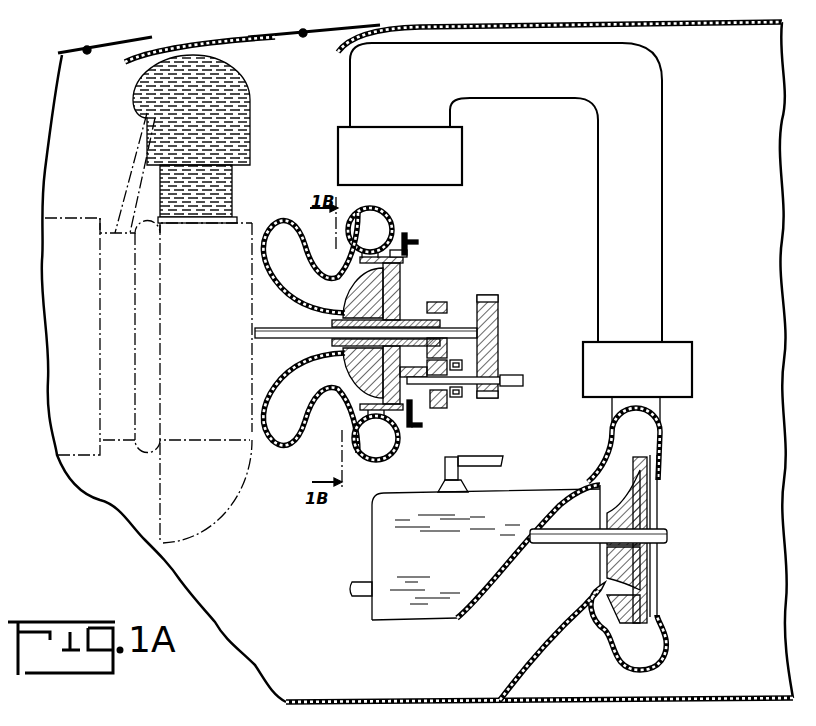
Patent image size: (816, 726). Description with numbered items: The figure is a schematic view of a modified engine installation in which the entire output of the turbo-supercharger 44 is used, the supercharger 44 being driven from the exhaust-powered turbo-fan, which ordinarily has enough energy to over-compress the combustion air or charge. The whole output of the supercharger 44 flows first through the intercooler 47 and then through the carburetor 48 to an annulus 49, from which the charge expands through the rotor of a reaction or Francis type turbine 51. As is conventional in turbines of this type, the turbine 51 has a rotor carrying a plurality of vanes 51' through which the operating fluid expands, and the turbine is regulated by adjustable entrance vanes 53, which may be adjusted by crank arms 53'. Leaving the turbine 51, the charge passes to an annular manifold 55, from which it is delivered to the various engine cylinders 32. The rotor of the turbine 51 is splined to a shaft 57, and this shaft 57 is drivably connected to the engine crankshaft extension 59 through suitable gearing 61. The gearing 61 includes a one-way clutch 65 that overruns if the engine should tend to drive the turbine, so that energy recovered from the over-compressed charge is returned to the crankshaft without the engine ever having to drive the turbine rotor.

The engine cylinders 32 is at (233, 188).
The turbo-supercharger 44 is at (638, 508).
The intercooler 47 is at (682, 363).
The carburetor 48 is at (462, 157).
The annulus 49 is at (400, 225).
The reaction turbine 51 is at (412, 333).
The vanes 51' is at (346, 333).
The adjustable entrance vanes 53 is at (404, 328).
The crank arms 53' is at (437, 237).
The annular manifold 55 is at (287, 205).
The shaft 57 is at (330, 323).
The engine crankshaft extension 59 is at (306, 344).
The gearing 61 is at (440, 405).
The one-way clutch 65 is at (456, 370).